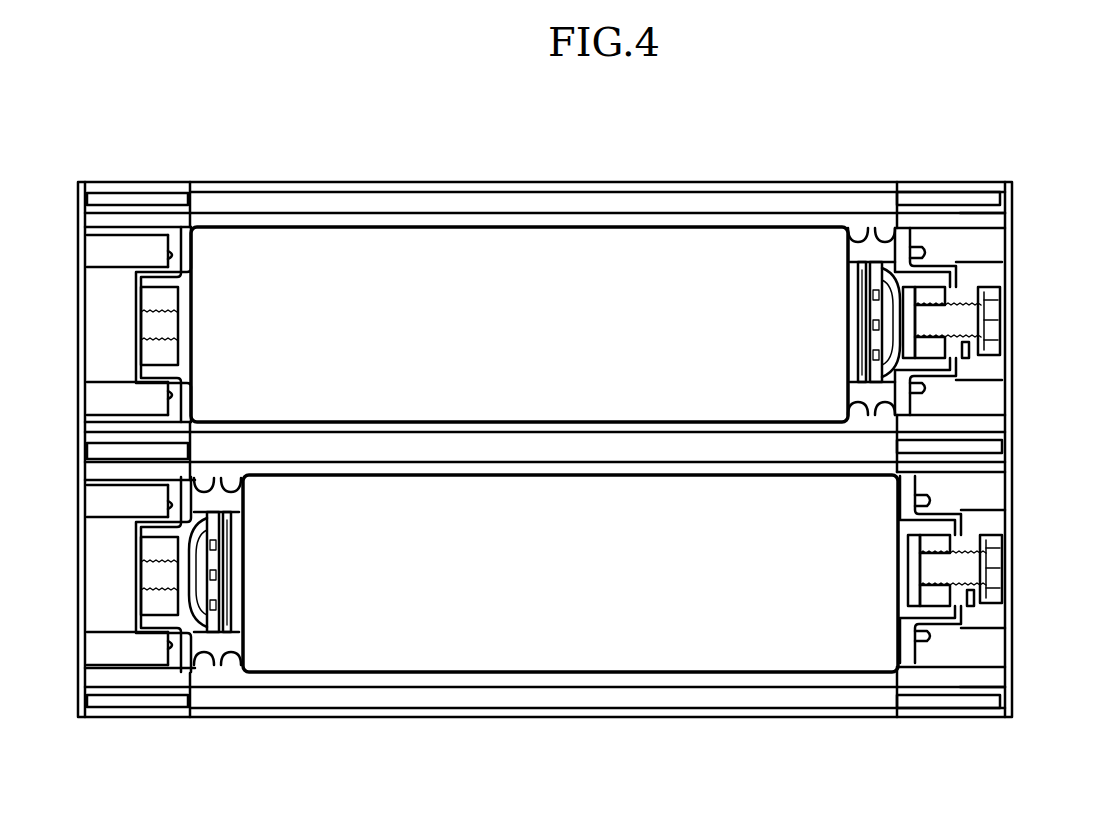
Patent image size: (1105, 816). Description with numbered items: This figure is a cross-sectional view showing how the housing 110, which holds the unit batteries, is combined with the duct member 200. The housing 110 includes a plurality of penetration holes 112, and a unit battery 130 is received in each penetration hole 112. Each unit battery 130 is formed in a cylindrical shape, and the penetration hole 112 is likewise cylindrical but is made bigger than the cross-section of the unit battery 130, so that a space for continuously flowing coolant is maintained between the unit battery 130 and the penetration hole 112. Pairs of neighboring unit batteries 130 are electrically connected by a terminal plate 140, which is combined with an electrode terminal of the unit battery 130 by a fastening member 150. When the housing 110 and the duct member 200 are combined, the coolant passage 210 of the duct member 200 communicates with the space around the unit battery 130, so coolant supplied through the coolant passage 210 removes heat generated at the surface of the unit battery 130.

The housing 110 is at (300, 182).
The penetration hole 112 is at (625, 213).
The unit battery 130 is at (457, 265).
The terminal plate 140 is at (956, 274).
The fastening member 150 is at (990, 298).
The duct member 200 is at (937, 182).
The coolant passage 210 is at (978, 213).